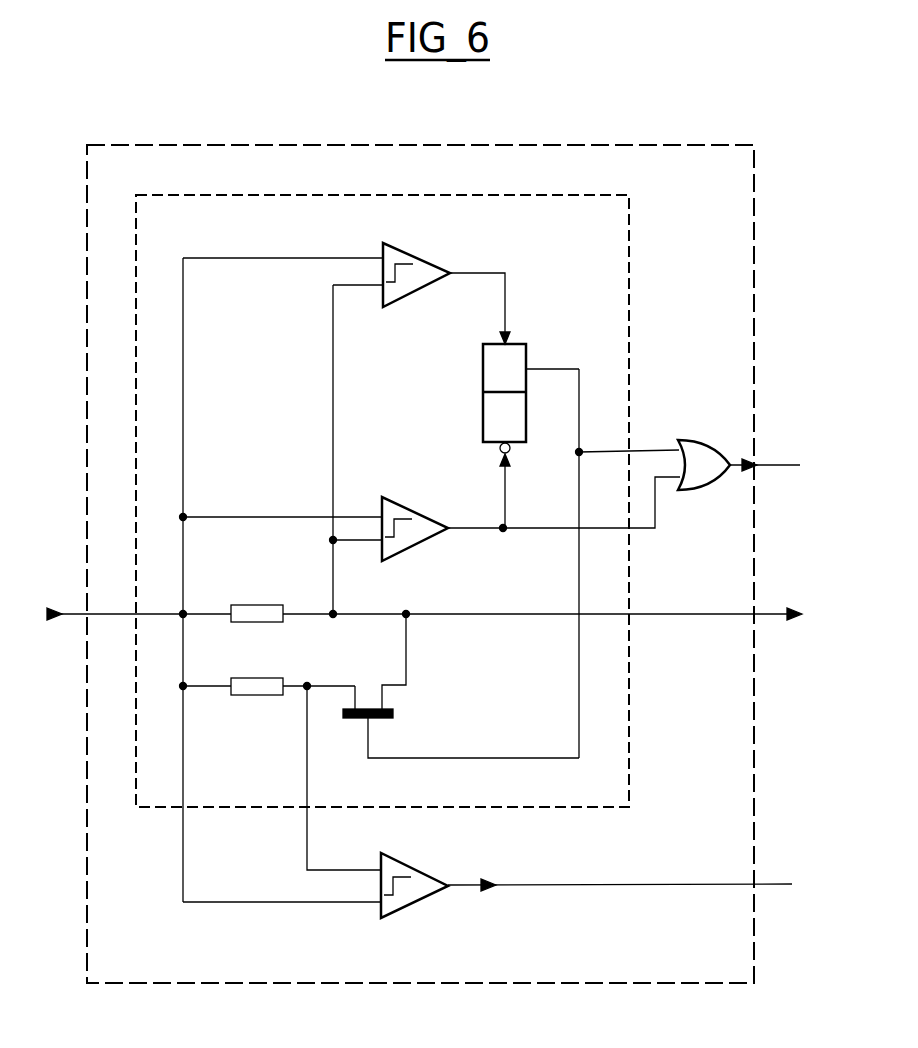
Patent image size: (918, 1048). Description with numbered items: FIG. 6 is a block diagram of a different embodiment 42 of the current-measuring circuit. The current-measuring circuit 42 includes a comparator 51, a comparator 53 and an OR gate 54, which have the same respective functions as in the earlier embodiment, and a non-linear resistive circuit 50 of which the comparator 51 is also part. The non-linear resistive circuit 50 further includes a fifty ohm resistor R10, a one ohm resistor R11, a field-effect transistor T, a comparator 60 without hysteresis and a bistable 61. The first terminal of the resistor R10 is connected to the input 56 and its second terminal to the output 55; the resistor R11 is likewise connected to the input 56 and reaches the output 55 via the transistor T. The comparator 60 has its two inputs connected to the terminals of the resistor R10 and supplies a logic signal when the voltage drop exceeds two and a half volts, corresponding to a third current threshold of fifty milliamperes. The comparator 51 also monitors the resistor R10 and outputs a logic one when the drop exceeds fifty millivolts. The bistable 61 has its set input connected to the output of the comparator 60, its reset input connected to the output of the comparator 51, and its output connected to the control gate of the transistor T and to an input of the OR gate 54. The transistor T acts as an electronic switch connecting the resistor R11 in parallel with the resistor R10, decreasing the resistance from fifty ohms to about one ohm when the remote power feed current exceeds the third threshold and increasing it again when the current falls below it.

The current-measuring circuit 42 is at (714, 145).
The non-linear resistive circuit 50 is at (630, 323).
The comparator 51 is at (408, 497).
The comparator 53 is at (412, 865).
The OR gate 54 is at (700, 440).
The output 55 is at (775, 608).
The input 56 is at (68, 610).
The comparator 60 is at (415, 250).
The bistable 61 is at (533, 341).
The resistor R10 is at (233, 597).
The resistor R11 is at (269, 674).
The field-effect transistor T is at (397, 713).